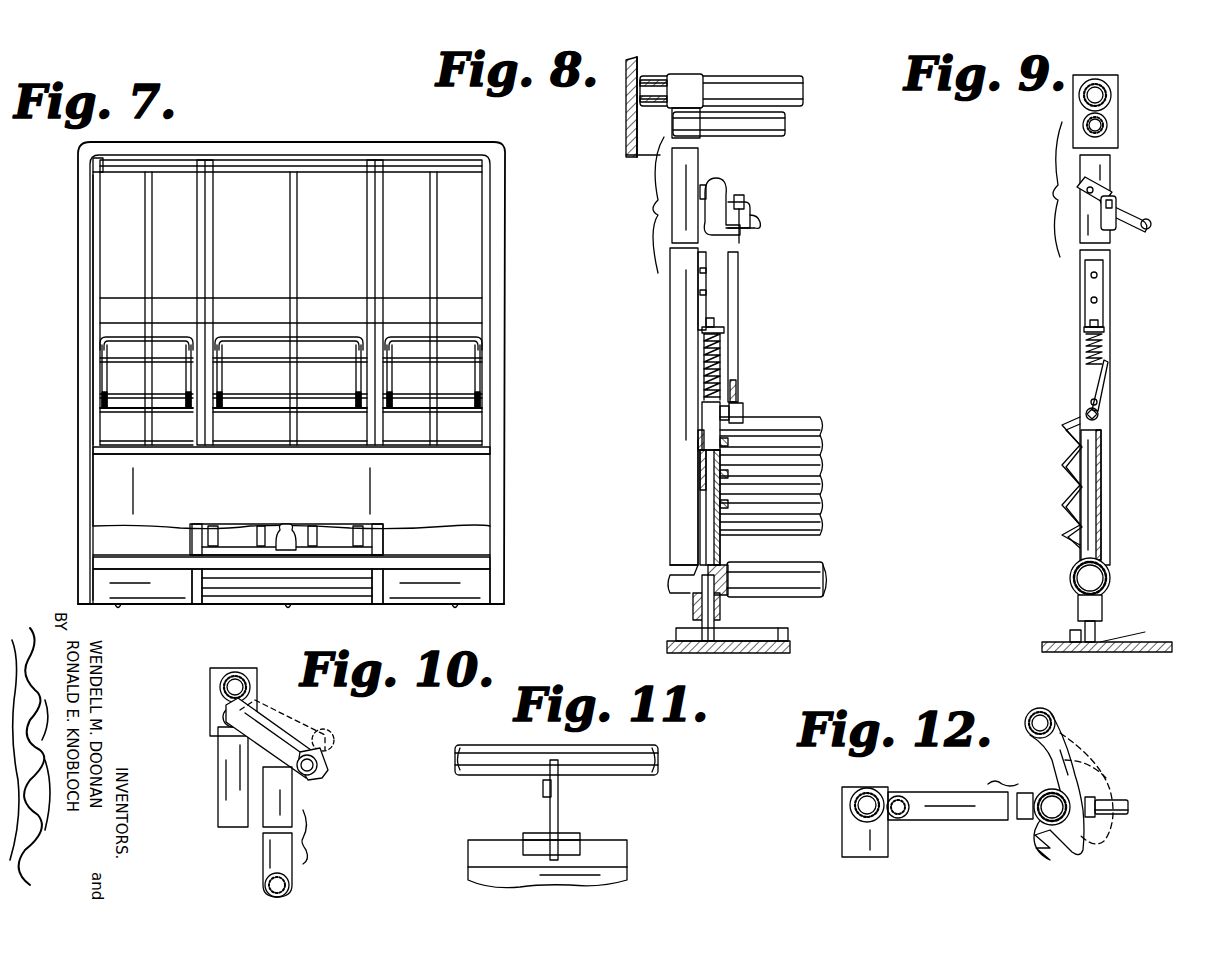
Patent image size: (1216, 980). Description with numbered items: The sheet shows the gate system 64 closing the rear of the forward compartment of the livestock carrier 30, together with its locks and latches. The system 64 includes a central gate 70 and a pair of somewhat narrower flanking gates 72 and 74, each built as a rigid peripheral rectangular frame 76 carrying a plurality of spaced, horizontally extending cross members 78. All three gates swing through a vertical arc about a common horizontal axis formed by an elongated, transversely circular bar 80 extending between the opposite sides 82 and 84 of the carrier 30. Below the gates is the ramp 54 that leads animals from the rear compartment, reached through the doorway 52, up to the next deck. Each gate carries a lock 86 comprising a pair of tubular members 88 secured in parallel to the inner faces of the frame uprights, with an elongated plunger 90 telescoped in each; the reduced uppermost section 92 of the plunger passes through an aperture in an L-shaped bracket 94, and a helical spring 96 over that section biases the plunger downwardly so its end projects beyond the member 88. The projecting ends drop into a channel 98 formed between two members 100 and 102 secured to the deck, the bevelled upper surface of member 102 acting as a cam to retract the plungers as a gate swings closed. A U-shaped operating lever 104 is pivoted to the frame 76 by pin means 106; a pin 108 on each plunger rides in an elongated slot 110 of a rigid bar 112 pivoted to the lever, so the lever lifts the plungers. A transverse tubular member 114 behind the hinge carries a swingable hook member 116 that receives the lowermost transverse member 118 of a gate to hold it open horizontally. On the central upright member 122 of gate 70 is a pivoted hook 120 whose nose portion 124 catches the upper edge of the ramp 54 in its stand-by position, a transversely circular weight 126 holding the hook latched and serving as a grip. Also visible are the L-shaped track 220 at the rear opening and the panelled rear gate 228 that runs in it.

In FIG. 7, the livestock carrier 30 is at (505, 148).
In FIG. 7, the doorway 52 is at (324, 522).
In FIG. 7, the ramp 54 is at (112, 494).
In FIG. 10, the ramp 54 is at (298, 806).
In FIG. 11, the ramp 54 is at (630, 852).
In FIG. 7, the gate system 64 is at (300, 188).
In FIG. 7, the central gate 70 is at (297, 276).
In FIG. 7, the flanking gate 72 is at (145, 272).
In FIG. 8, the flanking gate 72 is at (670, 460).
In FIG. 9, the flanking gate 72 is at (1085, 354).
In FIG. 7, the flanking gate 74 is at (480, 248).
In FIG. 8, the peripheral rectangular frame 76 is at (668, 326).
In FIG. 11, the peripheral rectangular frame 76 is at (500, 834).
In FIG. 12, the peripheral rectangular frame 76 is at (935, 792).
In FIG. 7, the cross members 78 is at (260, 340).
In FIG. 8, the cross members 78 is at (810, 416).
In FIG. 9, the cross members 78 is at (1060, 494).
In FIG. 8, the bar 80 is at (768, 78).
In FIG. 9, the bar 80 is at (1118, 109).
In FIG. 12, the bar 80 is at (850, 810).
In FIG. 7, the side of carrier 82 is at (94, 240).
In FIG. 7, the side of carrier 84 is at (490, 208).
In FIG. 8, the lock 86 is at (694, 607).
In FIG. 9, the lock 86 is at (1078, 602).
In FIG. 12, the lock 86 is at (1095, 798).
In FIG. 7, the tubular members 88 is at (398, 424).
In FIG. 8, the tubular members 88 is at (704, 501).
In FIG. 9, the tubular members 88 is at (1092, 488).
In FIG. 8, the plunger 90 is at (716, 627).
In FIG. 9, the plunger 90 is at (1092, 630).
In FIG. 12, the plunger 90 is at (1128, 806).
In FIG. 8, the uppermost section of plunger 92 is at (708, 410).
In FIG. 8, the L-shaped bracket 94 is at (722, 323).
In FIG. 9, the L-shaped bracket 94 is at (1084, 325).
In FIG. 8, the helical spring 96 is at (718, 366).
In FIG. 9, the helical spring 96 is at (1094, 349).
In FIG. 8, the channel 98 is at (776, 628).
In FIG. 8, the elongated member 100 is at (680, 633).
In FIG. 9, the elongated member 100 is at (1070, 652).
In FIG. 7, the elongated member 102 is at (208, 456).
In FIG. 9, the elongated member 102 is at (1145, 632).
In FIG. 8, the operating lever 104 is at (755, 214).
In FIG. 9, the operating lever 104 is at (1152, 222).
In FIG. 8, the pin means 106 is at (722, 192).
In FIG. 9, the pin means 106 is at (1093, 183).
In FIG. 8, the projecting pin 108 is at (746, 412).
In FIG. 9, the projecting pin 108 is at (1085, 413).
In FIG. 9, the elongated slot 110 is at (1100, 404).
In FIG. 8, the rigid bar 112 is at (740, 268).
In FIG. 9, the rigid bar 112 is at (1105, 377).
In FIG. 12, the tubular member 114 is at (1053, 714).
In FIG. 12, the hook member 116 is at (1052, 748).
In FIG. 8, the lowermost transverse member 118 is at (818, 562).
In FIG. 9, the lowermost transverse member 118 is at (1108, 574).
In FIG. 12, the lowermost transverse member 118 is at (1040, 818).
In FIG. 10, the hook 120 is at (268, 728).
In FIG. 11, the hook 120 is at (558, 806).
In FIG. 10, the central upright member 122 is at (228, 803).
In FIG. 10, the nose portion 124 is at (325, 775).
In FIG. 10, the weight 126 is at (315, 762).
In FIG. 11, the weight 126 is at (580, 838).
In FIG. 7, the track 220 is at (378, 548).
In FIG. 7, the gate 228 is at (236, 524).